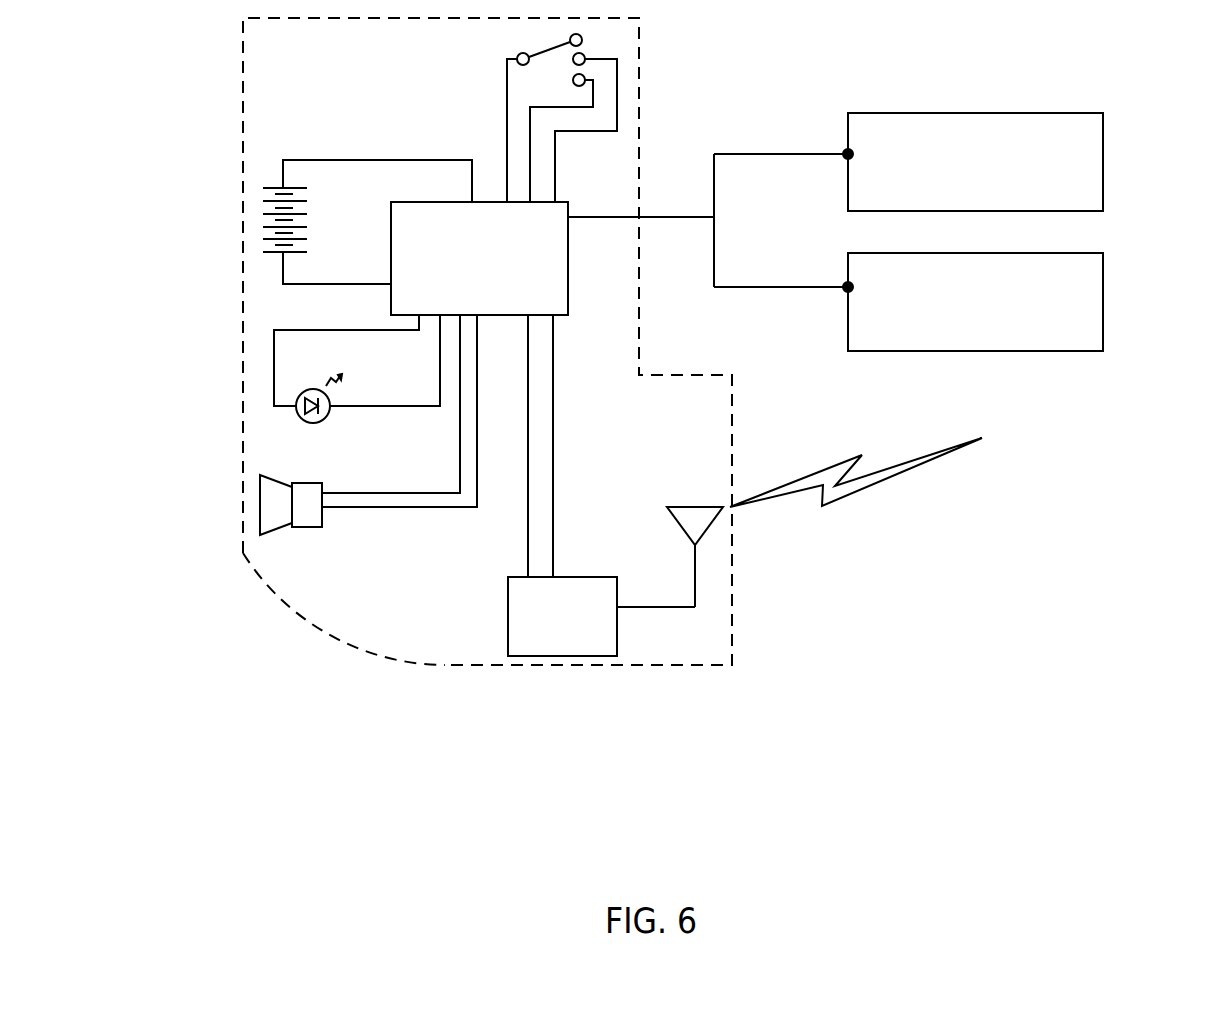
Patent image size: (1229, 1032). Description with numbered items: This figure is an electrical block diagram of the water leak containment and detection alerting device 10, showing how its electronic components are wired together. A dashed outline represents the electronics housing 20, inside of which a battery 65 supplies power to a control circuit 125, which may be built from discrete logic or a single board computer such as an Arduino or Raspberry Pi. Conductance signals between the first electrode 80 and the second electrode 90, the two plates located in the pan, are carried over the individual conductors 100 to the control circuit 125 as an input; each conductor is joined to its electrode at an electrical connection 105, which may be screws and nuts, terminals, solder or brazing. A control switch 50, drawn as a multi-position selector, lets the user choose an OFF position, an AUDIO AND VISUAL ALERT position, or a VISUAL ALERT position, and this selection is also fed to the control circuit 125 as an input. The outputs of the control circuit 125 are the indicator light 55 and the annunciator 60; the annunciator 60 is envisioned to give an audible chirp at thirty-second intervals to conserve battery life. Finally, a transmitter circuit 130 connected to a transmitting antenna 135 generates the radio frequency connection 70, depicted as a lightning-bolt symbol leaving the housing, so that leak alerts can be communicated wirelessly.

The water leak containment and detection alerting device 10 is at (228, 740).
The electronics housing 20 is at (242, 70).
The control switch 50 is at (585, 77).
The indicator light 55 is at (297, 407).
The annunciator 60 is at (258, 500).
The battery 65 is at (282, 215).
The radio frequency connection 70 is at (887, 477).
The first electrode 80 is at (1077, 302).
The second electrode 90 is at (1088, 177).
The individual conductors 100 is at (785, 153).
The electrical connection 105 is at (848, 154).
The control circuit 125 is at (548, 285).
The transmitter circuit 130 is at (543, 633).
The transmitting antenna 135 is at (705, 531).